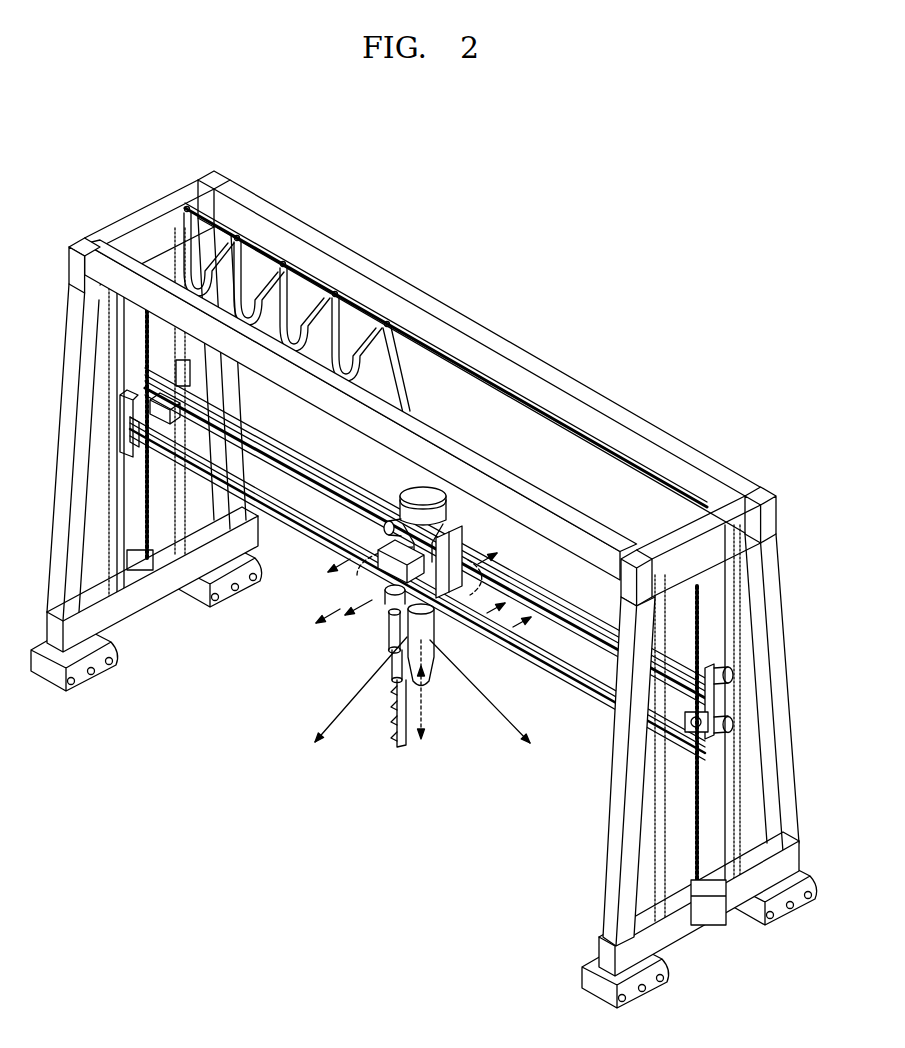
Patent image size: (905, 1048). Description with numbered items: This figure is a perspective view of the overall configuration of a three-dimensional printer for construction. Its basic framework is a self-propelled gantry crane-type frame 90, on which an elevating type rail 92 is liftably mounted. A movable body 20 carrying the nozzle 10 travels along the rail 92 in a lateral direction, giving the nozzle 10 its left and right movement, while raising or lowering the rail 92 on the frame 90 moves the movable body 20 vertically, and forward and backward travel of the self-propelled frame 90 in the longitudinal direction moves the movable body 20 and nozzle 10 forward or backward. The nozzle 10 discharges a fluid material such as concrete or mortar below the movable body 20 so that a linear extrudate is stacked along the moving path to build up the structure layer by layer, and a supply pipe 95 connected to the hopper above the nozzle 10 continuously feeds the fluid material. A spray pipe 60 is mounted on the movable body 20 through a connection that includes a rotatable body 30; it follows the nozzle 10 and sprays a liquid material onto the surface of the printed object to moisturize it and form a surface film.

The nozzle 10 is at (433, 688).
The movable body 20 is at (429, 609).
The rotatable body 30 is at (462, 583).
The spray pipe 60 is at (399, 746).
The gantry crane-type frame 90 is at (518, 316).
The elevating type rail 92 is at (318, 546).
The supply pipe 95 is at (408, 389).